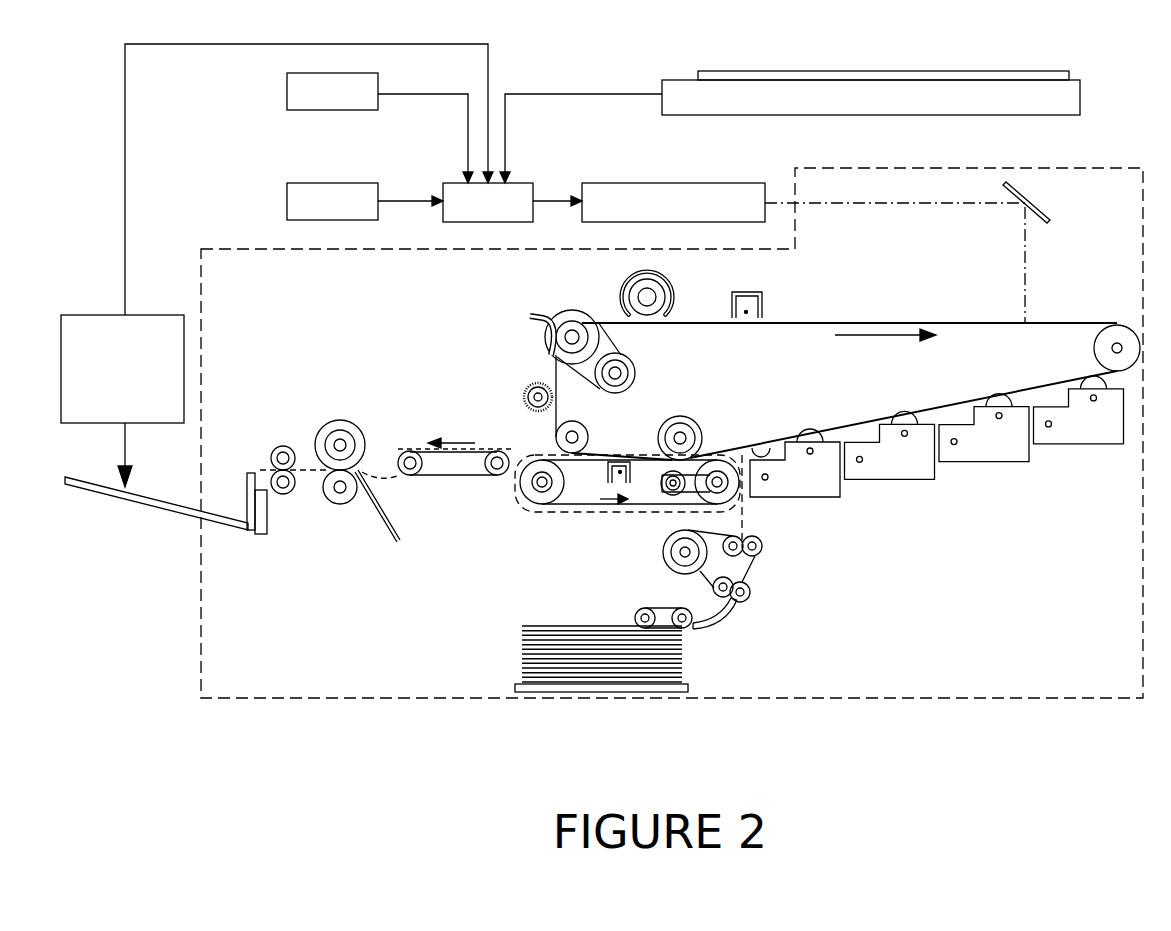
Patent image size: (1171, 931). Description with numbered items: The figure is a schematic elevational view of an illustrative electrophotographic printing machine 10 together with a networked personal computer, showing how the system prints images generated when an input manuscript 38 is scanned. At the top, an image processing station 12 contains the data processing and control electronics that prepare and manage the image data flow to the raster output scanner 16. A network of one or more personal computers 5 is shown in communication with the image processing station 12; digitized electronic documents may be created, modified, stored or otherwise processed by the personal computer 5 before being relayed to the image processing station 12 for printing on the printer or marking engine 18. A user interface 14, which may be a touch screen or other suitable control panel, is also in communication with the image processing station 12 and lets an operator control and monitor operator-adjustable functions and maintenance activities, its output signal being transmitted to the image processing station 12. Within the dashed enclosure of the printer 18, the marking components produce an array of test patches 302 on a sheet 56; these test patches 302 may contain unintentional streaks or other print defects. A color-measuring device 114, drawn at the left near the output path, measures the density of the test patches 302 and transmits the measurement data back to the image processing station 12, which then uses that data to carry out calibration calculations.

The personal computer 5 is at (276, 79).
The user interface 14 is at (276, 186).
The image processing station 12 is at (441, 160).
The raster output scanner 16 is at (578, 160).
The printing machine 10 is at (633, 61).
The original document on raster input scanner 38 is at (990, 74).
The printer 18 is at (1125, 145).
The color-measuring device 114 is at (84, 313).
The test patches 302 is at (762, 446).
The sheet 56 is at (548, 625).